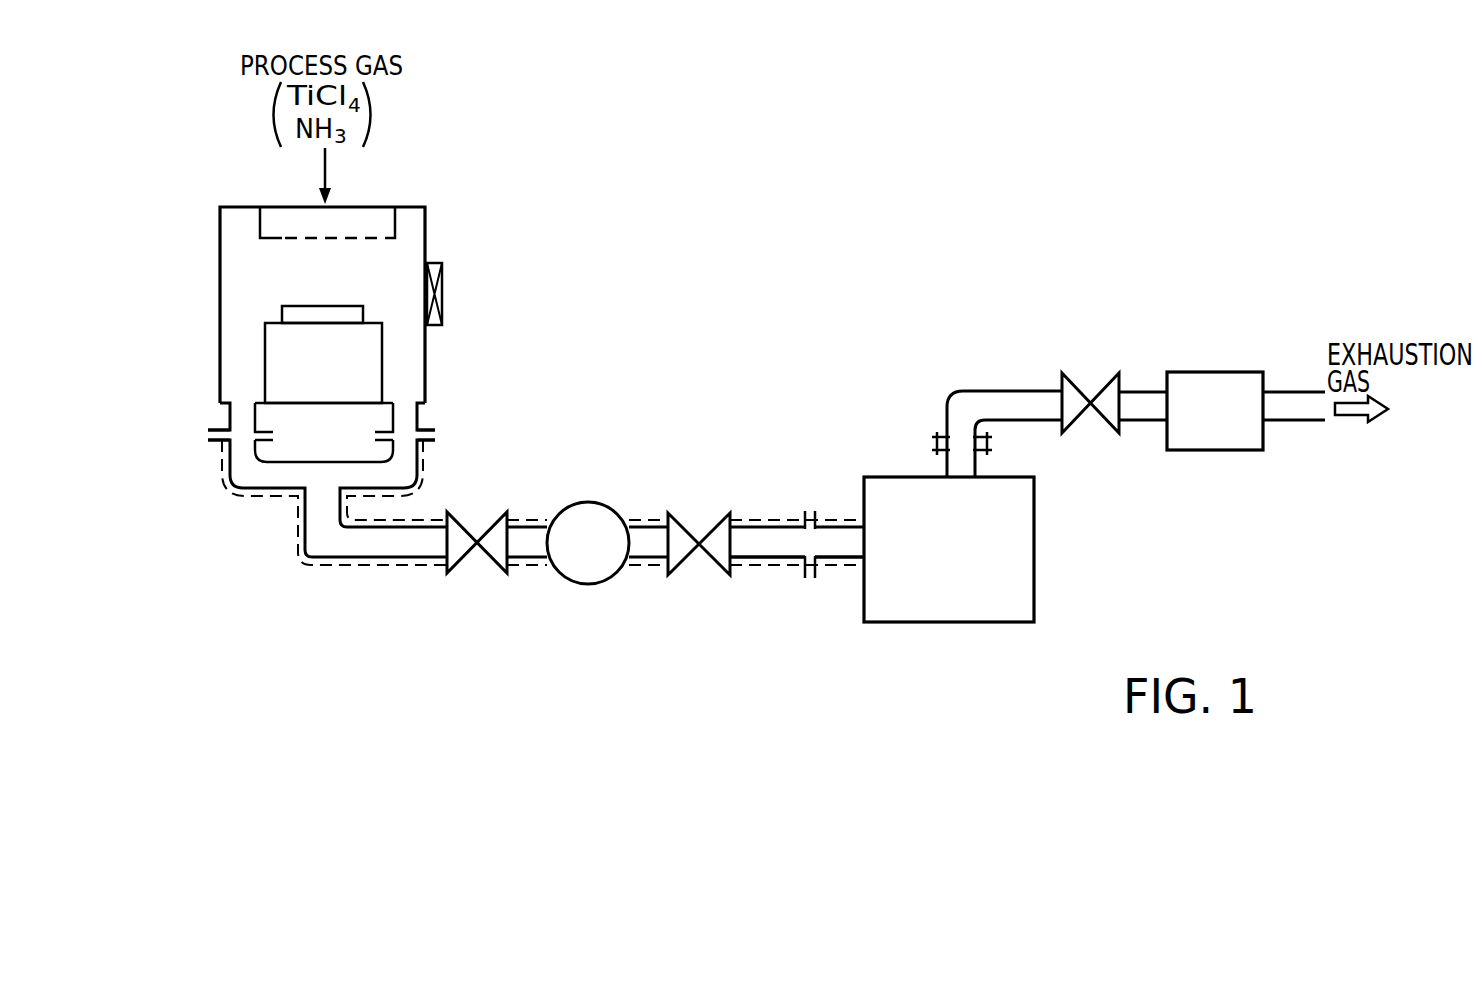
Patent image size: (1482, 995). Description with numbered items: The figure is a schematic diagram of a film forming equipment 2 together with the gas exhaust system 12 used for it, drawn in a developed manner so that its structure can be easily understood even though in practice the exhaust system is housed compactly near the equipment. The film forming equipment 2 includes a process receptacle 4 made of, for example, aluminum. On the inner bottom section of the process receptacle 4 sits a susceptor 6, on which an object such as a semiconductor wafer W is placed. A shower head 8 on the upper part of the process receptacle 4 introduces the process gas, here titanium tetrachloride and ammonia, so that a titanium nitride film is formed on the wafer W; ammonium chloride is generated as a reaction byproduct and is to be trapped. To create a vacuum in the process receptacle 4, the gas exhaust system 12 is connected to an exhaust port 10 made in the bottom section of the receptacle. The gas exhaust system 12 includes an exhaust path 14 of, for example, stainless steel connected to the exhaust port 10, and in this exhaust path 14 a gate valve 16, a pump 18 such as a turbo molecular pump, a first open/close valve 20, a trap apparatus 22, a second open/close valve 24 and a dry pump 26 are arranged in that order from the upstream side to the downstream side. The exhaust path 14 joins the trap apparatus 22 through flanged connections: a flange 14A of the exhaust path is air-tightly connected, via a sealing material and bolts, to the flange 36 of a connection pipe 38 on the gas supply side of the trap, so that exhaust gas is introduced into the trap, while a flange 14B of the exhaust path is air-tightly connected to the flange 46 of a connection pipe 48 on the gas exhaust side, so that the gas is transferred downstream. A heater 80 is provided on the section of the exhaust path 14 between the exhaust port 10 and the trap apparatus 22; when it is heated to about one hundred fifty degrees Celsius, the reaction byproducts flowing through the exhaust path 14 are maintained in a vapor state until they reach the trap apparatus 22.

The film forming equipment 2 is at (203, 346).
The process receptacle 4 is at (427, 237).
The susceptor 6 is at (375, 347).
The shower head 8 is at (377, 215).
The semiconductor wafer W is at (312, 305).
The exhaust port 10 is at (240, 406).
The gas exhaust system 12 is at (443, 676).
The exhaust path 14 is at (333, 542).
The flange of the exhaust path 14A is at (792, 580).
The flange of the exhaust path 14B is at (930, 426).
The gate valve 16 is at (467, 527).
The pump 18 is at (602, 502).
The first open/close valve 20 is at (685, 527).
The trap apparatus 22 is at (941, 635).
The second open/close valve 24 is at (1073, 382).
The dry pump 26 is at (1215, 370).
The flange 36 is at (823, 590).
The connection pipe 38 is at (842, 535).
The flange 46 is at (922, 465).
The connection pipe 48 is at (978, 467).
The heater 80 is at (397, 572).